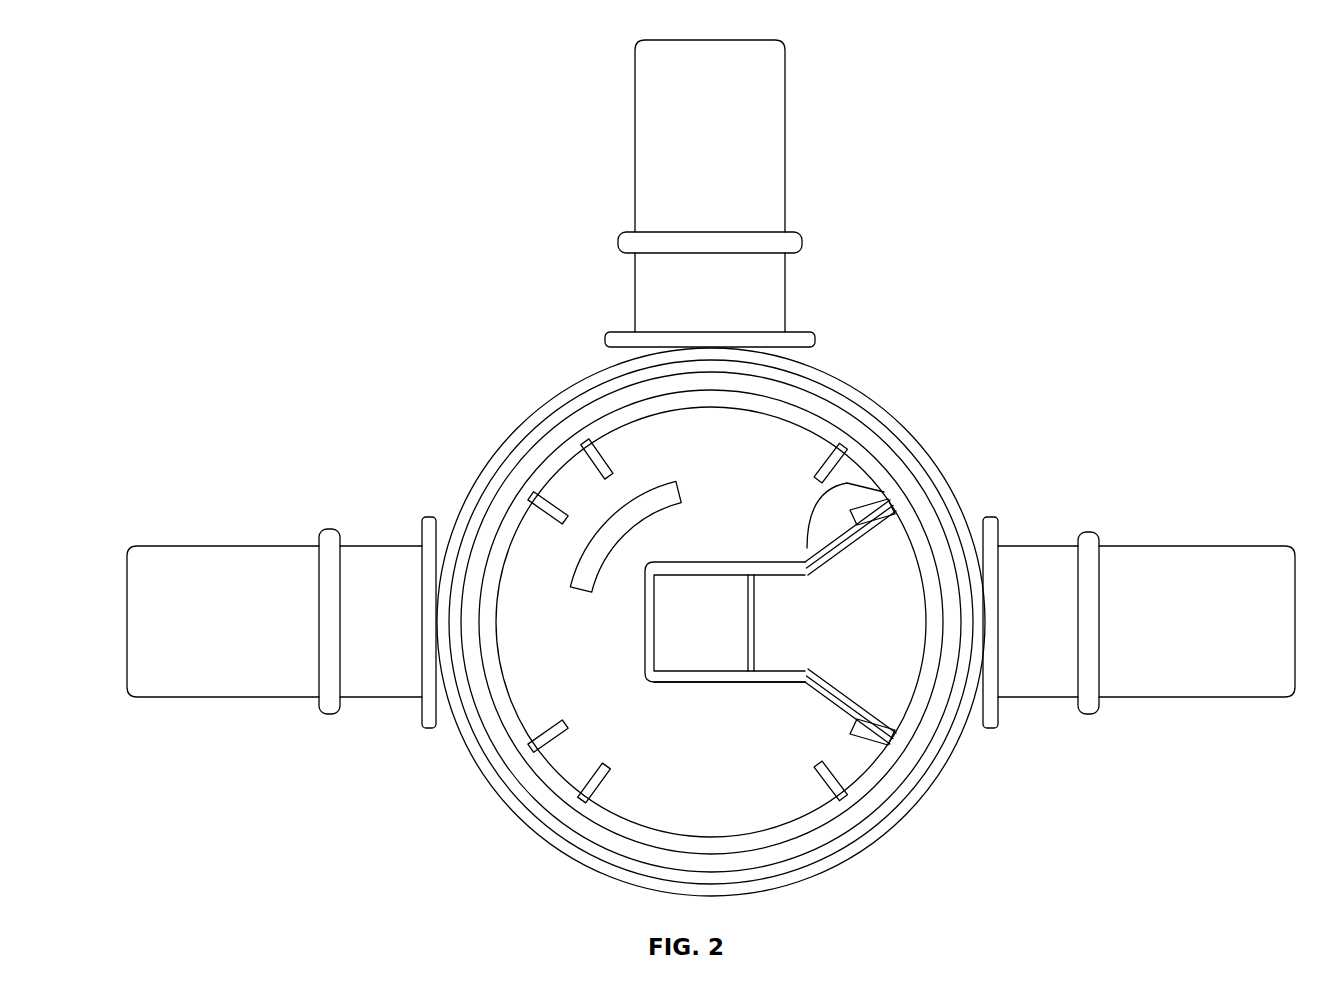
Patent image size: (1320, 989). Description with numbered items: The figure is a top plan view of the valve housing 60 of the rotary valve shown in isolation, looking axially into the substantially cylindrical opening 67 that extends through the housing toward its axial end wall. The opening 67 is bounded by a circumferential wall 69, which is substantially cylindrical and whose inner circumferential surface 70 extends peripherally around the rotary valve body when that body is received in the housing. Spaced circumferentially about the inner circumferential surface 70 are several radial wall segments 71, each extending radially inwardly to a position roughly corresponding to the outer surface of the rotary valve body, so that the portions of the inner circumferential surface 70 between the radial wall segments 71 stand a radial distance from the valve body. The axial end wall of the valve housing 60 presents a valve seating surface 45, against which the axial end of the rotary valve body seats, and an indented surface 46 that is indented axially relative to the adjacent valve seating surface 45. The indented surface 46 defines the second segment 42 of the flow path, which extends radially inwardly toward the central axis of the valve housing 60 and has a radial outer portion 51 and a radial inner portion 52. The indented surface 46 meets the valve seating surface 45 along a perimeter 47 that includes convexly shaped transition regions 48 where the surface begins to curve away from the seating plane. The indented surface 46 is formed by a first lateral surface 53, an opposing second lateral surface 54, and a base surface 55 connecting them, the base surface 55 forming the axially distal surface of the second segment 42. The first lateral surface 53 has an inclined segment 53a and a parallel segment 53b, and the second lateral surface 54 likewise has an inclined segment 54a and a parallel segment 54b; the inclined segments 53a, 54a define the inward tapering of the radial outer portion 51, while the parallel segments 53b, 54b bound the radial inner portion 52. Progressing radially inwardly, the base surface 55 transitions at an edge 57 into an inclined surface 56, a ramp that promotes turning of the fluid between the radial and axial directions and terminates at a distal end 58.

The second segment 42 is at (843, 717).
The valve seating surface 45 is at (872, 484).
The indented surface 46 is at (912, 630).
The perimeter 47 is at (725, 622).
The transition regions 48 is at (737, 685).
The radial outer portion 51 is at (912, 675).
The radial inner portion 52 is at (716, 657).
The first lateral surface 53 is at (835, 688).
The inclined segment 53a is at (833, 688).
The parallel segment 53b is at (775, 671).
The second lateral surface 54 is at (839, 558).
The inclined segment 54a is at (833, 553).
The parallel segment 54b is at (775, 578).
The base surface 55 is at (905, 598).
The inclined surface 56 is at (680, 602).
The edge 57 is at (748, 627).
The distal end 58 is at (645, 620).
The valve housing 60 is at (925, 413).
The opening 67 is at (615, 450).
The circumferential wall 69 is at (647, 410).
The inner circumferential surface 70 is at (673, 408).
The radial wall segments 71 is at (823, 467).